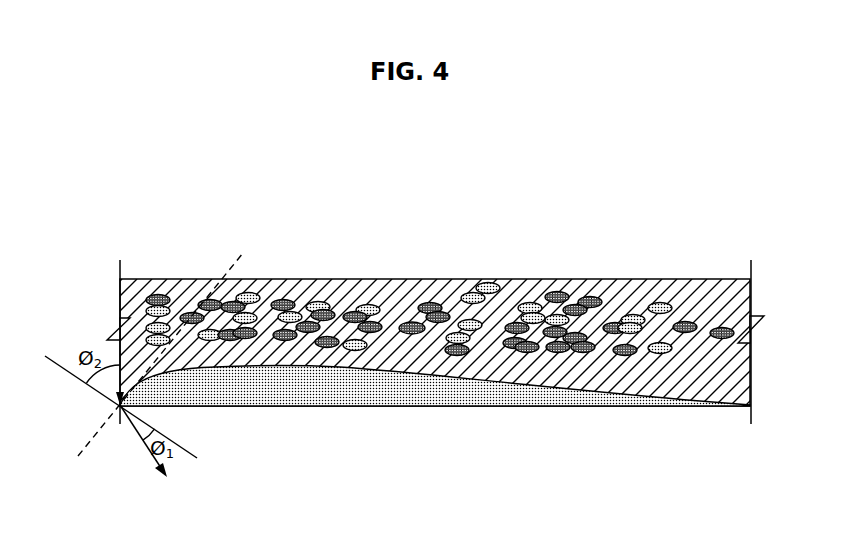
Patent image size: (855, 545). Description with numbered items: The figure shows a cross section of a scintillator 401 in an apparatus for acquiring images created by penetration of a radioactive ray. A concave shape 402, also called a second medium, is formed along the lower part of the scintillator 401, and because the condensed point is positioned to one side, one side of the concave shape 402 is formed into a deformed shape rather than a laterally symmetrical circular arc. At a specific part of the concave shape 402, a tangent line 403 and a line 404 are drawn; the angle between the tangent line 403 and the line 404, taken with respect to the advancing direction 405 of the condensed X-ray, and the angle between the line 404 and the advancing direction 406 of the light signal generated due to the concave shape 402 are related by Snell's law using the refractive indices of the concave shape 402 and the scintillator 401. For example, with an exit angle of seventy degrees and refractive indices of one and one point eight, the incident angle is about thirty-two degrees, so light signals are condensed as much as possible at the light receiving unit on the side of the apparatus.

The scintillator 401 is at (425, 278).
The concave shape 402 is at (425, 407).
The tangent line 403 is at (243, 253).
The line 404 is at (67, 370).
The advancing direction of a condensed X-ray 405 is at (117, 318).
The advancing direction of the light signal 406 is at (152, 468).